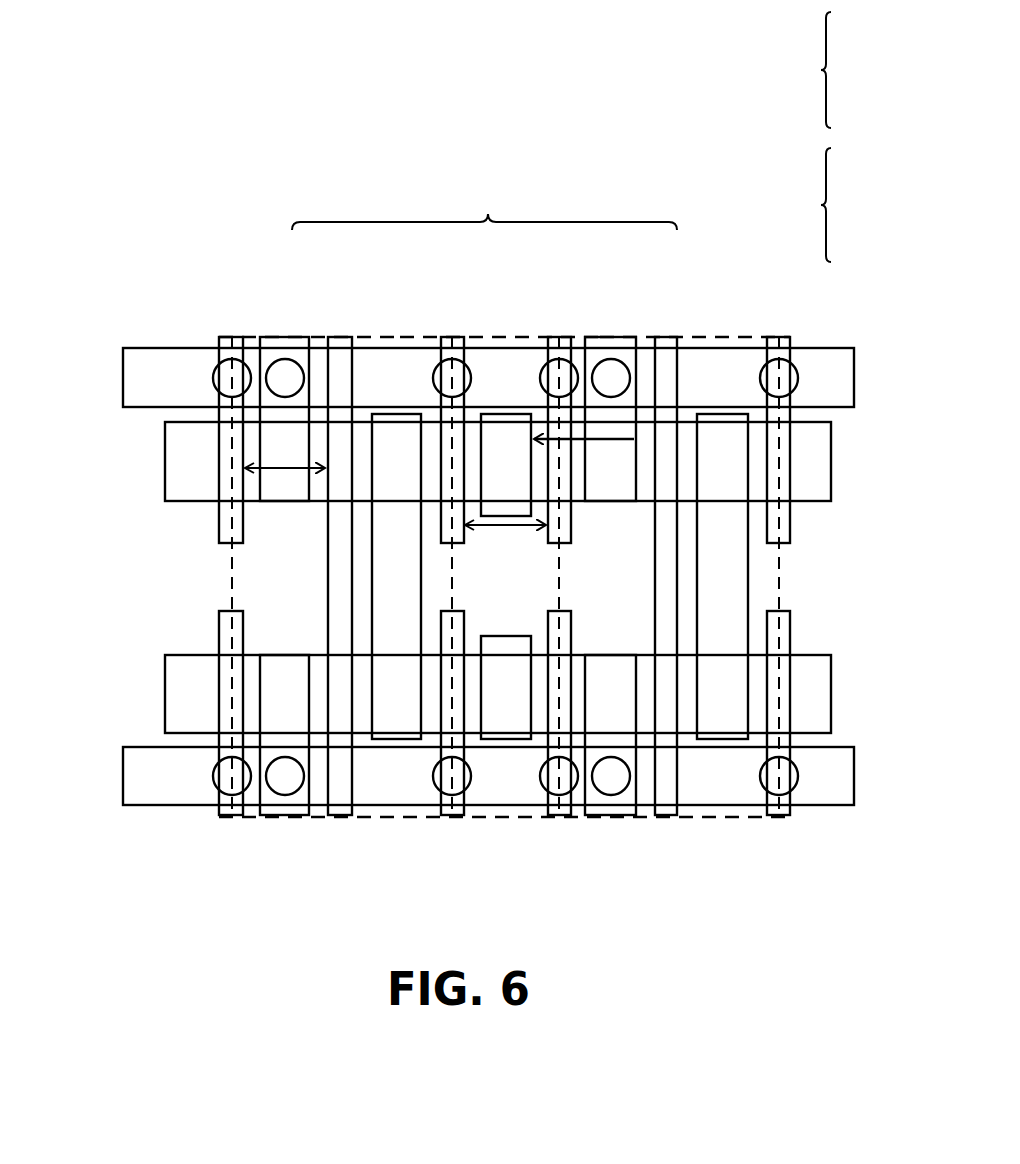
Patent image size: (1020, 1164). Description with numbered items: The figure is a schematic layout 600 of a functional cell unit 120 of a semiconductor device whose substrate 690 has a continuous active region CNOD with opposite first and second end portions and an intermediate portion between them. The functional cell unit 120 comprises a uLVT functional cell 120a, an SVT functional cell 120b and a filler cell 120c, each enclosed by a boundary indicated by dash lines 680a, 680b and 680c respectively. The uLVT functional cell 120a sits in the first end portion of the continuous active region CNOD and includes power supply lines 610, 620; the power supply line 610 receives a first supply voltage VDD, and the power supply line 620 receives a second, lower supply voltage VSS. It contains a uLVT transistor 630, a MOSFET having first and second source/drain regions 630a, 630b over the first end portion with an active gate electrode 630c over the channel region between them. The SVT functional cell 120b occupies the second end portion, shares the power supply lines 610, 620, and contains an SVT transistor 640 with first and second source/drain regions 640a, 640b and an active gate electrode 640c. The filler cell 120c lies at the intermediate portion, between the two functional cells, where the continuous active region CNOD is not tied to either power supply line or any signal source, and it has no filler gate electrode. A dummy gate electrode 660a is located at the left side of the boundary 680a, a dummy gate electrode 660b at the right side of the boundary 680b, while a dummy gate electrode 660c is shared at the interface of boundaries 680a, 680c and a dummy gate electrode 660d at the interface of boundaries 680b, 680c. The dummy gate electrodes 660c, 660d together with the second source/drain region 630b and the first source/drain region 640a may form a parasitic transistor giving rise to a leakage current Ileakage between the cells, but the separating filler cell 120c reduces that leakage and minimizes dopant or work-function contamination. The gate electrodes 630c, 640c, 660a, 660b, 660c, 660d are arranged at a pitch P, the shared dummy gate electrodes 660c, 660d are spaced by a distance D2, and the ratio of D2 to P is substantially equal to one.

The layout 600 is at (856, 913).
The power supply line 610 is at (160, 358).
The power supply line 620 is at (150, 790).
The uLVT transistor 630 is at (831, 70).
The first source/drain region 630a is at (321, 505).
The second source/drain region 630b is at (362, 504).
The active gate electrode 630c is at (338, 620).
The SVT transistor 640 is at (831, 208).
The first source/drain region 640a is at (645, 505).
The second source/drain region 640b is at (690, 505).
The active gate electrode 640c is at (665, 635).
The dummy gate electrode 660a is at (221, 522).
The dummy gate electrode 660b is at (789, 522).
The dummy gate electrode 660c is at (456, 535).
The dummy gate electrode 660d is at (571, 538).
The dash lines 680a is at (281, 820).
The dash lines 680b is at (680, 820).
The dash lines 680c is at (508, 820).
The substrate 690 is at (248, 575).
The functional cell unit 120 is at (484, 209).
The uLVT functional cell 120a is at (320, 330).
The SVT functional cell 120b is at (663, 330).
The filler cell 120c is at (505, 330).
The pitch P is at (285, 459).
The distance D2 is at (513, 528).
The leakage current Ileakage is at (598, 439).
The first supply voltage VDD is at (121, 378).
The second supply voltage VSS is at (121, 776).
The continuous active region CNOD is at (165, 462).